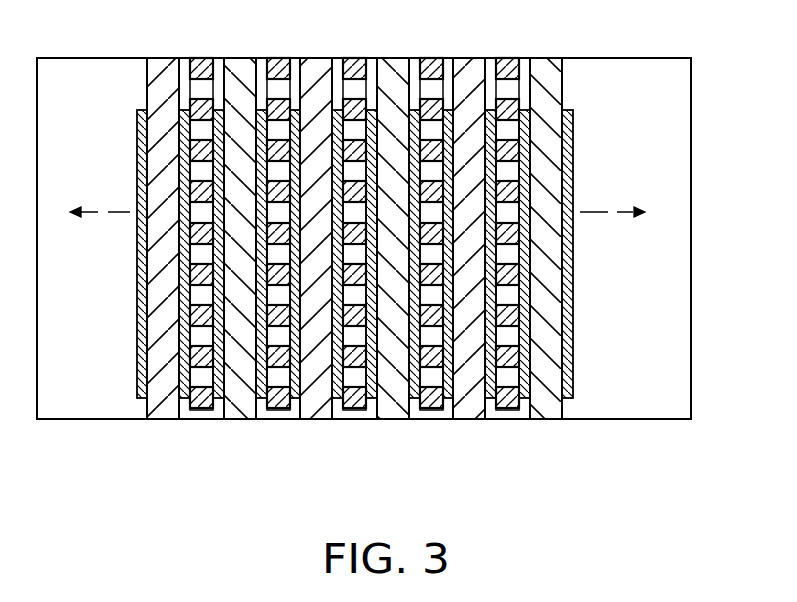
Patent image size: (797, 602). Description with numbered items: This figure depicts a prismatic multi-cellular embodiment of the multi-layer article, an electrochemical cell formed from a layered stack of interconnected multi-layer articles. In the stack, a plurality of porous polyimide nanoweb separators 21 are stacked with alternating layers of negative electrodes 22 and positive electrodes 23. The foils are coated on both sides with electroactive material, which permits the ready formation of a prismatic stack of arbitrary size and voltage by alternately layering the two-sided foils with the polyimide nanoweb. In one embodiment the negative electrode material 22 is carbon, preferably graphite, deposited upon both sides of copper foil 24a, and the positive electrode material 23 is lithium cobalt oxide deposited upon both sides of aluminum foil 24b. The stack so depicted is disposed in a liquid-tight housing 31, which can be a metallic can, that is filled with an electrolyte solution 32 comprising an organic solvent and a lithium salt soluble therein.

The porous polyimide nanoweb separator 21 is at (509, 405).
The negative electrode 22 is at (449, 110).
The positive electrode 23 is at (524, 110).
The copper foil 24a is at (453, 487).
The aluminum foil 24b is at (530, 507).
The housing 31 is at (692, 170).
The electrolyte solution 32 is at (660, 295).